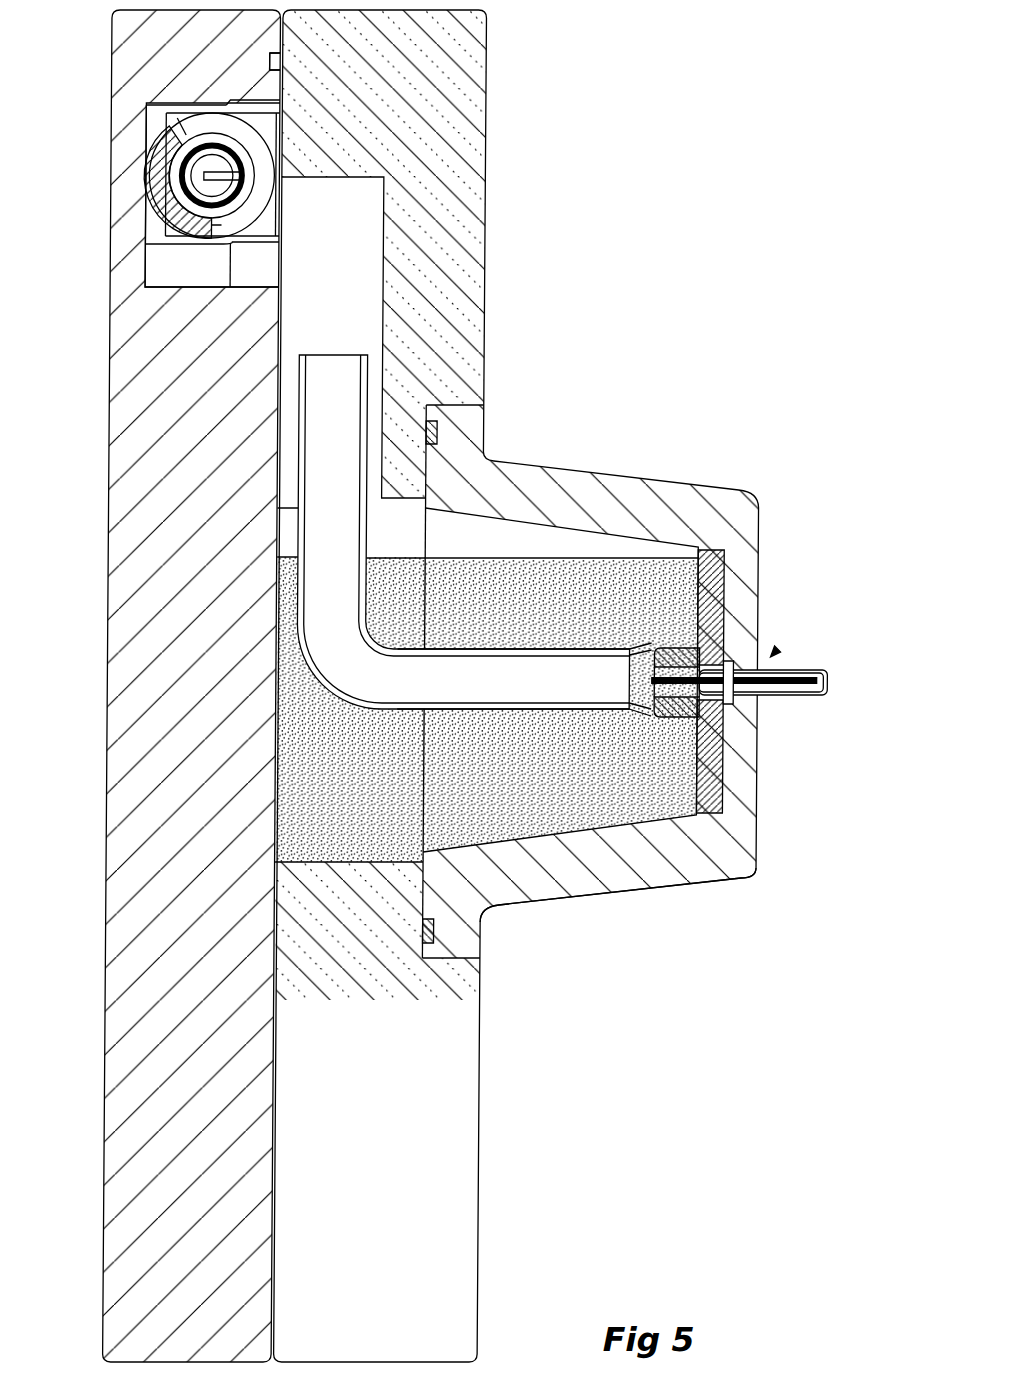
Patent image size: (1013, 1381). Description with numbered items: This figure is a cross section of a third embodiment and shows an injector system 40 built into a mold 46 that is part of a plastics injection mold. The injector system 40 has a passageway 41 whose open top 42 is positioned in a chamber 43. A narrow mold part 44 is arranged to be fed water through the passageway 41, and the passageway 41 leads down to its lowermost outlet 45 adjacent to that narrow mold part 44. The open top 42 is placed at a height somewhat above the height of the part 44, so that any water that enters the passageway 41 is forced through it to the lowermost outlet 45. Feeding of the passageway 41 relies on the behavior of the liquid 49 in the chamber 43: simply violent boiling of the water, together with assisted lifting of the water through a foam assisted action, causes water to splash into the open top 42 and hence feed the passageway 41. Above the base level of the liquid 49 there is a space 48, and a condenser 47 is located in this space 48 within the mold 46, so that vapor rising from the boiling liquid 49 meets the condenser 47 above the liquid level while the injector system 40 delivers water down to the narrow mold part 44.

The injector system 40 is at (775, 653).
The passageway 41 is at (498, 689).
The open top 42 is at (337, 355).
The chamber 43 is at (524, 558).
The narrow mold part 44 is at (793, 695).
The lowermost outlet 45 is at (823, 671).
The mold 46 is at (679, 863).
The condenser 47 is at (156, 175).
The space 48 is at (280, 211).
The liquid 49 is at (580, 560).